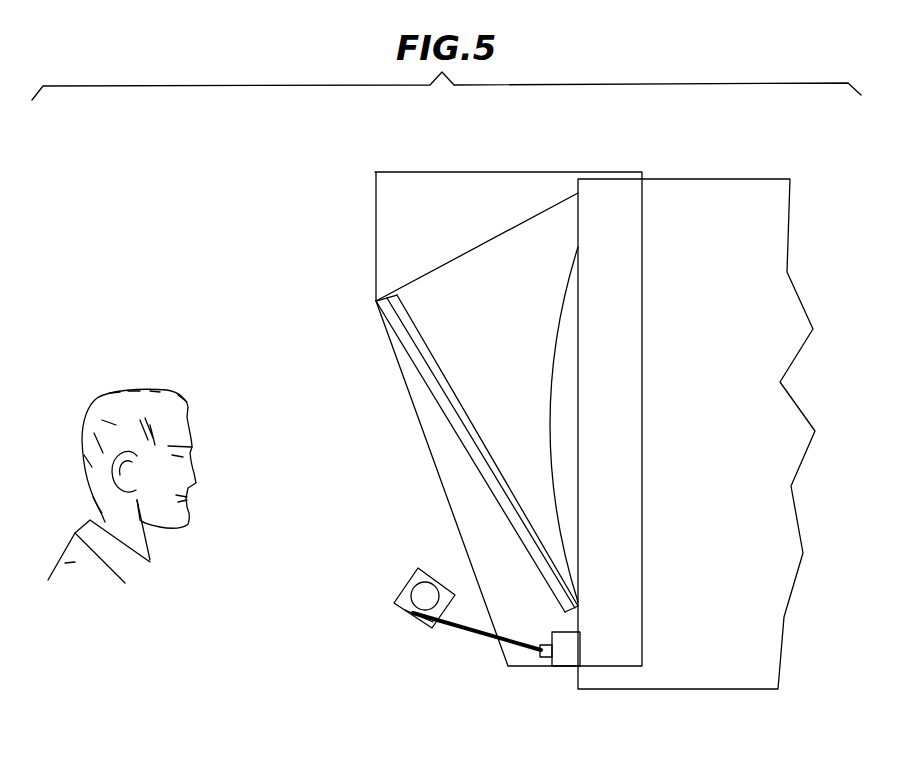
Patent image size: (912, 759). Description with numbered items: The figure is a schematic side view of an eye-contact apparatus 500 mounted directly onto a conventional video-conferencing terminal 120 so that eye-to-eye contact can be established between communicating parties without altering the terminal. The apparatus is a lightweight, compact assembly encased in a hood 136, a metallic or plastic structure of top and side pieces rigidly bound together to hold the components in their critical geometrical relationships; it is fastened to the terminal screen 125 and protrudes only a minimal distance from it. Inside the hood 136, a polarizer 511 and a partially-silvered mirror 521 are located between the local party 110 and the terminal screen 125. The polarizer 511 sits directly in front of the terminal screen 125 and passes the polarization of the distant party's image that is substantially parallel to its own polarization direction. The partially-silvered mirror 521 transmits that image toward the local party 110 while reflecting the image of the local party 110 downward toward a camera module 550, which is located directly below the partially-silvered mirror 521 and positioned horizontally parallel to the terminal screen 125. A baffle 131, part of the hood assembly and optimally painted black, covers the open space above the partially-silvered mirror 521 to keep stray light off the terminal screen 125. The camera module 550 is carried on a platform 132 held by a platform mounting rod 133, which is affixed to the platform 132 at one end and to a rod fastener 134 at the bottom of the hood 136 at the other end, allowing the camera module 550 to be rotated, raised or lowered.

The eye-contact apparatus 500 is at (279, 148).
The local party 110 is at (111, 383).
The video-conferencing terminal 120 is at (723, 178).
The terminal screen 125 is at (557, 330).
The baffle 131 is at (470, 250).
The platform 132 is at (405, 612).
The platform mounting rod 133 is at (480, 635).
The rod fastener 134 is at (562, 662).
The hood 136 is at (498, 172).
The polarizer 511 is at (460, 410).
The partially-silvered mirror 521 is at (432, 390).
The camera module 550 is at (405, 590).